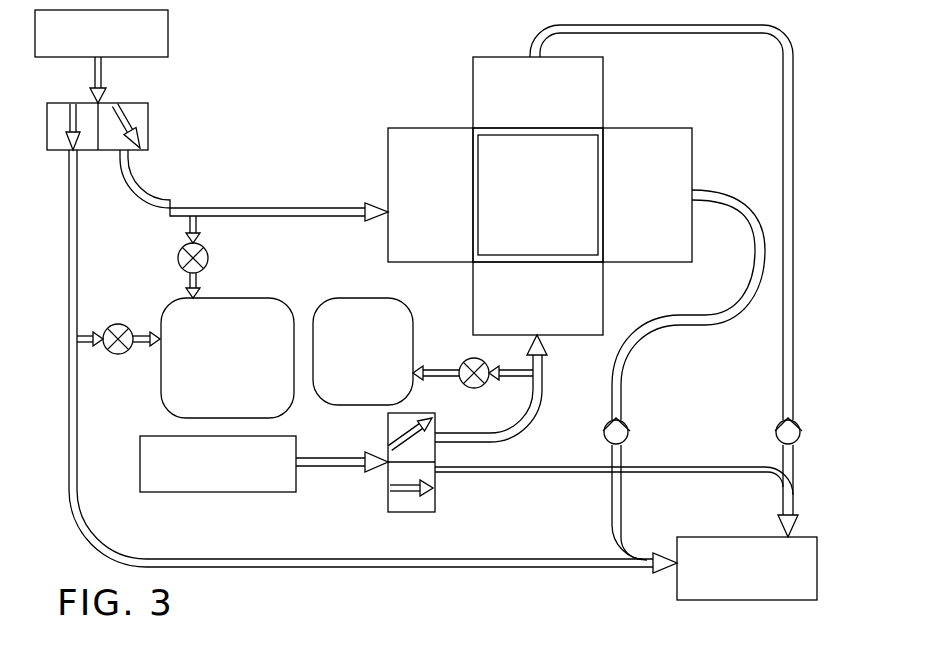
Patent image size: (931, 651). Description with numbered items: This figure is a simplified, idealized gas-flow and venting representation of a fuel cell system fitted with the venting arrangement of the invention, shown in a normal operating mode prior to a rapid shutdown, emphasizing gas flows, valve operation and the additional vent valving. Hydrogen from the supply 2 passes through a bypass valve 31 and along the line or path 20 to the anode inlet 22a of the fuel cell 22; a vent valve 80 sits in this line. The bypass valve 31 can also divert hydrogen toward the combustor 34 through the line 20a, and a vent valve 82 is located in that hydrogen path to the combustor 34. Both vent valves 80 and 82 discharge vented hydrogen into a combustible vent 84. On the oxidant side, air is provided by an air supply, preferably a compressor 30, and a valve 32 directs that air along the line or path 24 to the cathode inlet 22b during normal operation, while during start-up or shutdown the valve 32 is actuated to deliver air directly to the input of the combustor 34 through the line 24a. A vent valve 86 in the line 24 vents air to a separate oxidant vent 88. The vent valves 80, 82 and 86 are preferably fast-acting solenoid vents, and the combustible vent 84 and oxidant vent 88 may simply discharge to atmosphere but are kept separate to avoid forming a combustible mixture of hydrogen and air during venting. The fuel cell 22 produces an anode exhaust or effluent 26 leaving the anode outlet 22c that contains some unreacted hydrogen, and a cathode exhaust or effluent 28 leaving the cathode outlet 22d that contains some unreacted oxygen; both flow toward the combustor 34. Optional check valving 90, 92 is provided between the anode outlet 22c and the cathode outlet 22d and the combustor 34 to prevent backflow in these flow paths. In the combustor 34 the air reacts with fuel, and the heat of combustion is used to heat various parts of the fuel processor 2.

The fuel processor 2 is at (168, 36).
The bypass valve 31 is at (140, 103).
The line or path 20 is at (153, 198).
The line 20a is at (69, 278).
The vent valve 80 is at (208, 258).
The vent valve 82 is at (118, 323).
The combustible vent 84 is at (255, 298).
The oxidant vent 88 is at (365, 298).
The vent valve 86 is at (468, 358).
The fuel cell 22 is at (541, 224).
The anode inlet 22a is at (388, 160).
The cathode inlet 22b is at (577, 335).
The anode outlet 22c is at (692, 162).
The cathode outlet 22d is at (497, 57).
The exhaust or effluent 26 is at (707, 318).
The exhaust or effluent 28 is at (795, 220).
The check valving 90 is at (624, 420).
The check valving 92 is at (778, 421).
The oxidant stream 24 is at (507, 433).
The line 24a is at (575, 473).
The valve 32 is at (435, 496).
The compressor 30 is at (268, 492).
The combustor 34 is at (722, 537).